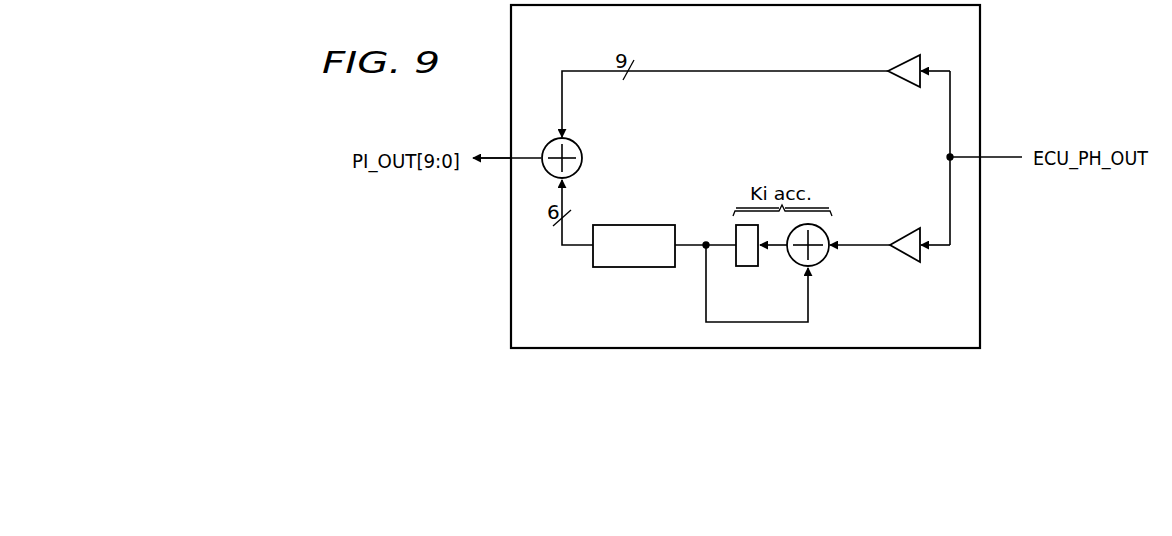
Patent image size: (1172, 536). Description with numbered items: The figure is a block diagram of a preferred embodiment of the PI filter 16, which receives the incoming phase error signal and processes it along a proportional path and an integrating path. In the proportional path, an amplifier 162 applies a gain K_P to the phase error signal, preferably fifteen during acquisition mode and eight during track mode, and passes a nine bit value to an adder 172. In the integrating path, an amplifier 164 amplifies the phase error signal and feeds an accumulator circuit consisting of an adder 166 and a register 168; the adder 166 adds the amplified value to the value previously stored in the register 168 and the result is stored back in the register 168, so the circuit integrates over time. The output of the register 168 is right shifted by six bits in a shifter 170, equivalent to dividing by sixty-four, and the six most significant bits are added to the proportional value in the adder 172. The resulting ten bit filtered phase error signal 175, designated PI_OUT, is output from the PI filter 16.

The PI filter 16 is at (463, 205).
The amplifier 162 is at (903, 87).
The amplifier 164 is at (903, 263).
The adder 166 is at (822, 263).
The register 168 is at (748, 267).
The shifter 170 is at (632, 268).
The adder 172 is at (580, 144).
The filtered phase error signal 175 is at (490, 156).